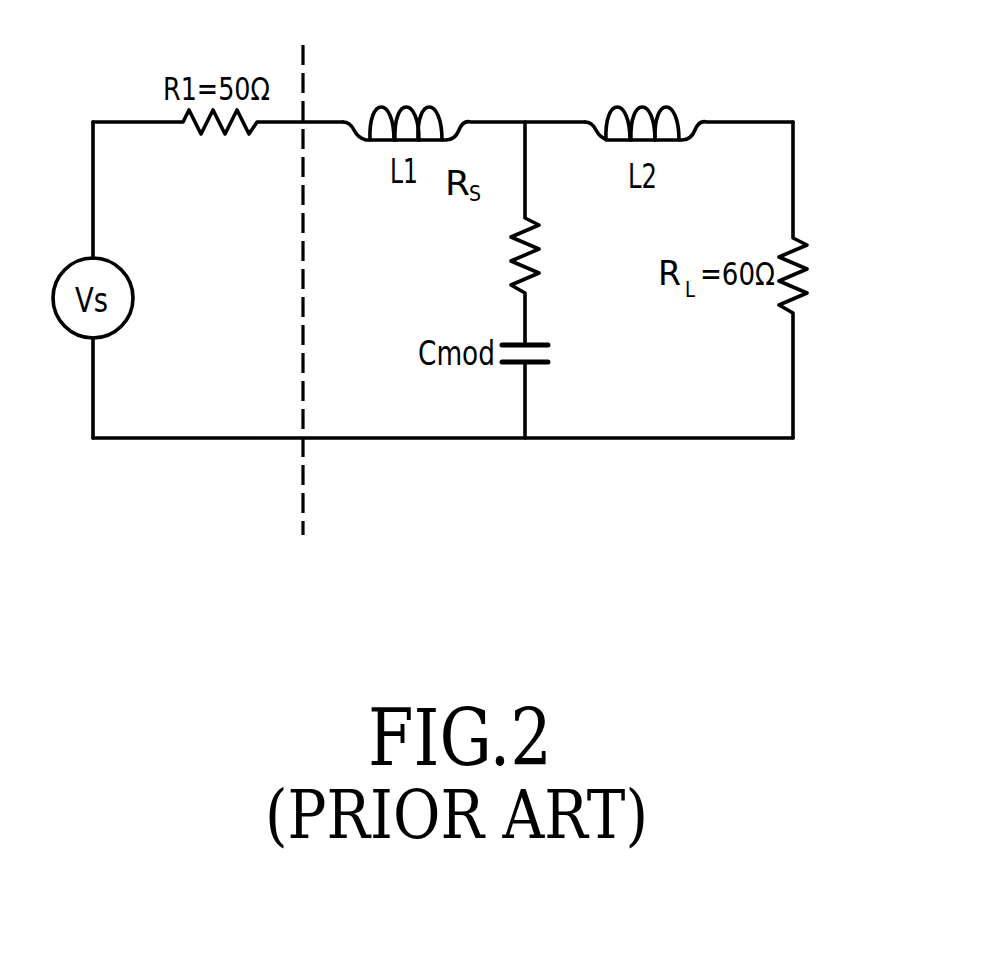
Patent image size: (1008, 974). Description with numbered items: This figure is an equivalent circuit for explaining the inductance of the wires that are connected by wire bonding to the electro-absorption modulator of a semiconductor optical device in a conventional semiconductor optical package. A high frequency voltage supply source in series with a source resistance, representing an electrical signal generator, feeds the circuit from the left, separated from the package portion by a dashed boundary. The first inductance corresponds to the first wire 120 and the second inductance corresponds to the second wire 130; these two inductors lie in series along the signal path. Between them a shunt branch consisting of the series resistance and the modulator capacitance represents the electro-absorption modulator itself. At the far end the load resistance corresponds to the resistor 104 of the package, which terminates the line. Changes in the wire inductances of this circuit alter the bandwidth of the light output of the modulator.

The first wire 120 is at (406, 100).
The second wire 130 is at (642, 100).
The resistor 104 is at (820, 276).